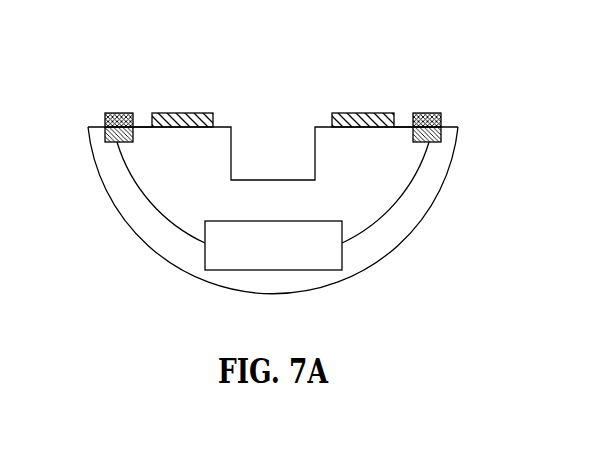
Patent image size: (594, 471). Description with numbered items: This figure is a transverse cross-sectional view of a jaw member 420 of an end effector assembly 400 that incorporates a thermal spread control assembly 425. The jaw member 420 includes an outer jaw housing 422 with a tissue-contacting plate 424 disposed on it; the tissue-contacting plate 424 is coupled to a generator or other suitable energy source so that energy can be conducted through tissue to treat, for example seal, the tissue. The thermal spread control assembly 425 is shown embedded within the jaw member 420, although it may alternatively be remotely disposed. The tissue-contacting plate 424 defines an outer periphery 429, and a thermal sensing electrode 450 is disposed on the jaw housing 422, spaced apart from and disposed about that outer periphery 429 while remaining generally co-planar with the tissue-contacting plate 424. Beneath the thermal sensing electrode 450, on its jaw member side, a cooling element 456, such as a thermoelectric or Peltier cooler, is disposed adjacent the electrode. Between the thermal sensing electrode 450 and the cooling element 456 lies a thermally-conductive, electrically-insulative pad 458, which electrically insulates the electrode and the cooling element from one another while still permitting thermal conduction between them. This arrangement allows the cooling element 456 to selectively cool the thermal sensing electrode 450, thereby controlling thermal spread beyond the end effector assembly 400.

The end effector assembly 400 is at (271, 180).
The jaw member 420 is at (281, 222).
The outer jaw housing 422 is at (172, 245).
The tissue-contacting plate 424 is at (170, 112).
The thermal spread control assembly 425 is at (278, 272).
The outer periphery 429 is at (146, 117).
The thermal sensing electrode 450 is at (271, 125).
The cooling element 456 is at (110, 143).
The thermally-conductive, electrically-insulative pad 458 is at (105, 121).